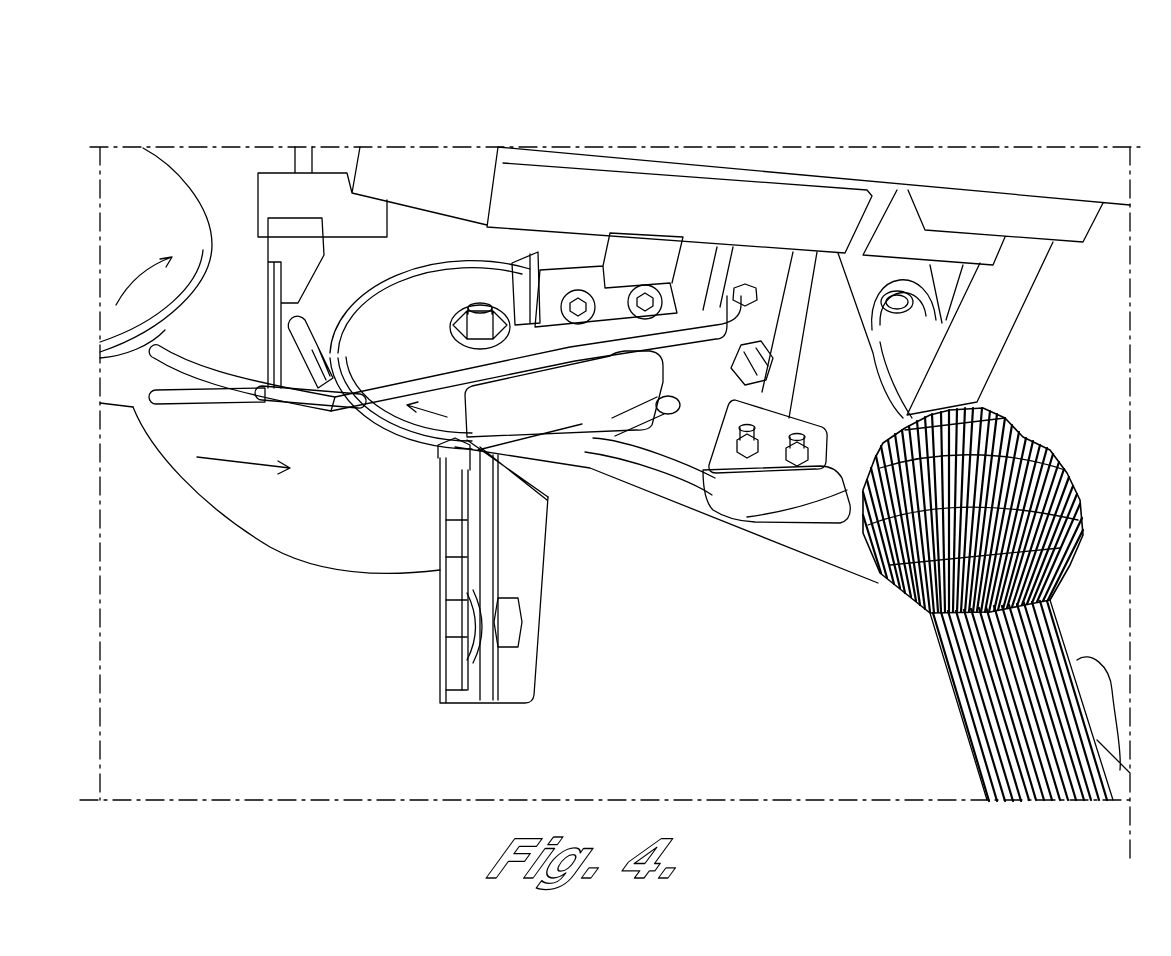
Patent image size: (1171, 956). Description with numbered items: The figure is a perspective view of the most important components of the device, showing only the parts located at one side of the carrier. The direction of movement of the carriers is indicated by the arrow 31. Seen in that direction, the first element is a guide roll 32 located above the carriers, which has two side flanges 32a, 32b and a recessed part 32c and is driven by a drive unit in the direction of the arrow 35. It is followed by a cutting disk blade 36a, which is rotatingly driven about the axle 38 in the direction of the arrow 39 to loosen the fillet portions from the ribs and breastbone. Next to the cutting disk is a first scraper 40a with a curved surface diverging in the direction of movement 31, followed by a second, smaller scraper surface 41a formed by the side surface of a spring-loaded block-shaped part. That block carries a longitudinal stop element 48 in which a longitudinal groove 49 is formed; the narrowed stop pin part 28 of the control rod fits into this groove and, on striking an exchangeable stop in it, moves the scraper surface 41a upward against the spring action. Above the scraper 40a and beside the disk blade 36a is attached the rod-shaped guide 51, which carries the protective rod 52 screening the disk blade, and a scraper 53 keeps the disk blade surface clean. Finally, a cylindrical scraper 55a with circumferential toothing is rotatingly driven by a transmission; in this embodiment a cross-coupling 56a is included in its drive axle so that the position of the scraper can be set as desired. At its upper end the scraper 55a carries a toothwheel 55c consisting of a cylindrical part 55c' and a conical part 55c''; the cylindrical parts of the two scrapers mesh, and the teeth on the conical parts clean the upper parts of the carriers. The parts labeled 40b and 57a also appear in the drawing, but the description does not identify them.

The narrowed portion 28 is at (1100, 688).
The arrow 31 is at (234, 463).
The guide roll 32 is at (195, 237).
The side flange 32a is at (202, 199).
The side flange 32b is at (200, 347).
The recessed part 32c is at (119, 362).
The arrow 35 is at (147, 283).
The cutting disk blade 36a is at (409, 262).
The axle 38 is at (480, 303).
The arrow 39 is at (412, 445).
The first scraper 40a is at (593, 430).
The support bracket 40b is at (543, 503).
The second scraper surface 41a is at (770, 487).
The longitudinal stop element 48 is at (687, 467).
The longitudinal groove 49 is at (657, 480).
The rod-shaped guide 51 is at (373, 432).
The protective rod 52 is at (303, 340).
The scraper 53 is at (513, 293).
The cylindrical scraper 55a is at (1067, 637).
The toothwheel 55c is at (1003, 510).
The cylindrical part 55c' is at (1019, 435).
The conical part 55c'' is at (1020, 557).
The cross-coupling 56a is at (916, 330).
The support arm 57a is at (957, 398).